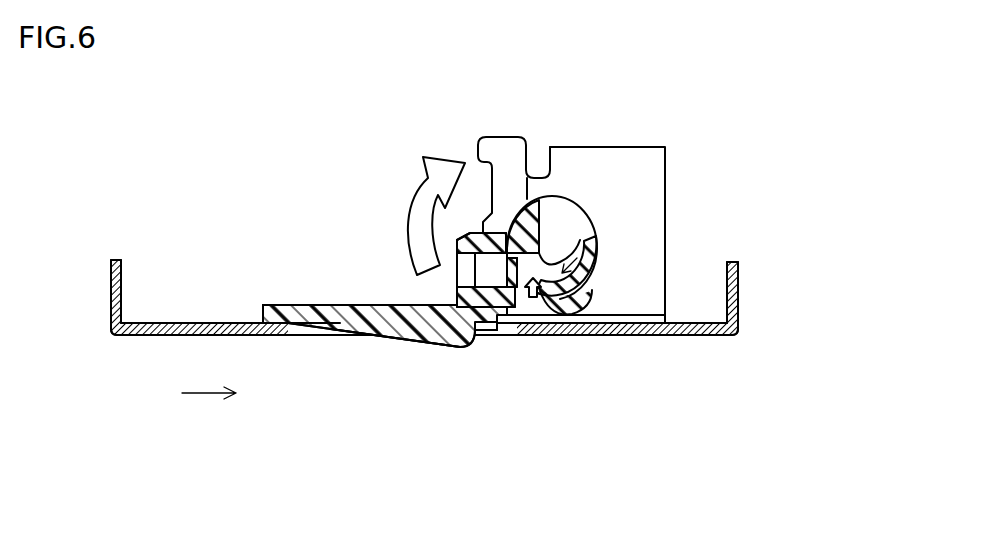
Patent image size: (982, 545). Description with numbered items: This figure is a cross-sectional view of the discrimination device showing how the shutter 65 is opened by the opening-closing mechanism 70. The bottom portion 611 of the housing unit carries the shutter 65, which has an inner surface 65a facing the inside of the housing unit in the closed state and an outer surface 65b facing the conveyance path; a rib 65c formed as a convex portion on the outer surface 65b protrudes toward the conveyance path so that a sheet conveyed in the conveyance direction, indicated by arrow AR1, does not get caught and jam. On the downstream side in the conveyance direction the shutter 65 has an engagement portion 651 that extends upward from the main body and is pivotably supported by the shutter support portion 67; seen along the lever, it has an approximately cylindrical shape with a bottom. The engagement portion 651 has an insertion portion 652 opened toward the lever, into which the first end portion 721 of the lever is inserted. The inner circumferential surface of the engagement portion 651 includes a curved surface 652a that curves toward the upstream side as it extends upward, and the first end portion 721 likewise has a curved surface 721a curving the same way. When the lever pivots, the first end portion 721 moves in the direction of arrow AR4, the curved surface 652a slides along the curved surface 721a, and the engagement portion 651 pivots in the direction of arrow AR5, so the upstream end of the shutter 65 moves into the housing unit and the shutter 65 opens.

The bottom portion 611 is at (692, 336).
The shutter 65 is at (355, 305).
The inner surface 65a is at (299, 305).
The outer surface 65b is at (299, 327).
The rib 65c is at (423, 340).
The shutter support portion 67 is at (648, 147).
The opening-closing mechanism 70 is at (610, 229).
The first end portion 721 is at (519, 272).
The curved surface 721a is at (510, 257).
The engagement portion 651 is at (527, 205).
The insertion portion 652 is at (560, 268).
The curved surface 652a is at (560, 258).
The arrow AR1 is at (209, 415).
The arrow AR4 is at (542, 299).
The arrow AR5 is at (405, 212).